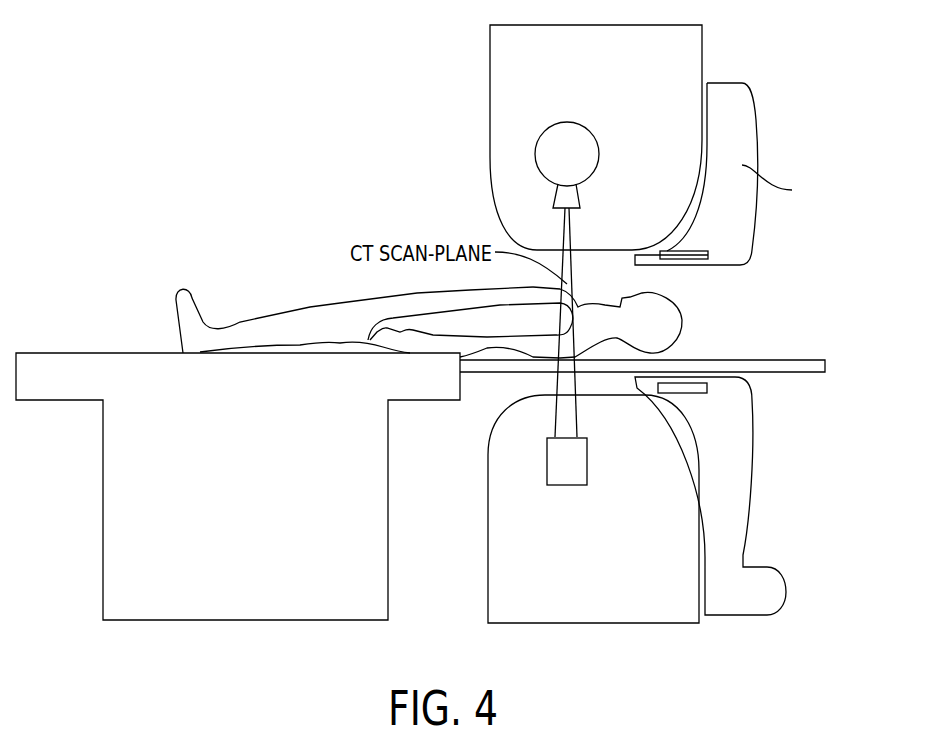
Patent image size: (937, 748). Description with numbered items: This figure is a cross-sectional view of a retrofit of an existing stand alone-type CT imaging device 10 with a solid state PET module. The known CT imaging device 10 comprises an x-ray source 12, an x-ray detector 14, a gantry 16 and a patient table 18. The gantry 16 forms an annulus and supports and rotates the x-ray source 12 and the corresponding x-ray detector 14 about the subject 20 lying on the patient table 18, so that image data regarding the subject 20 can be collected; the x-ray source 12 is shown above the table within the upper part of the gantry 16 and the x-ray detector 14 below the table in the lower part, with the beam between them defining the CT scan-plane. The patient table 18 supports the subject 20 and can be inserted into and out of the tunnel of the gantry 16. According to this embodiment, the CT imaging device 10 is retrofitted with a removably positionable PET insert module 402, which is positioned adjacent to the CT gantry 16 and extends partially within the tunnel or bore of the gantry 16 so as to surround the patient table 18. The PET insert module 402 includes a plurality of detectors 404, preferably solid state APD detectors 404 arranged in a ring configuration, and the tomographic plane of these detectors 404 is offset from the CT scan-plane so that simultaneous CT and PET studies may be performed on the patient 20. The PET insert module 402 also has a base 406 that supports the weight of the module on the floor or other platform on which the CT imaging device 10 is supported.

The stand alone-type CT imaging device 10 is at (240, 143).
The x-ray source 12 is at (543, 135).
The x-ray detector 14 is at (545, 474).
The gantry 16 is at (488, 62).
The patient table 18 is at (103, 557).
The subject 20 is at (262, 296).
The PET insert module 402 is at (733, 108).
The detectors 404 is at (700, 253).
The base 406 is at (768, 587).